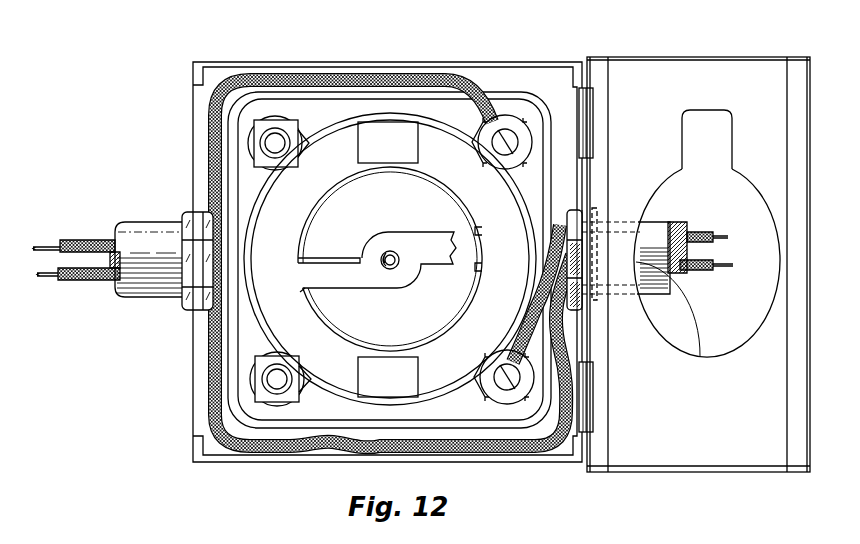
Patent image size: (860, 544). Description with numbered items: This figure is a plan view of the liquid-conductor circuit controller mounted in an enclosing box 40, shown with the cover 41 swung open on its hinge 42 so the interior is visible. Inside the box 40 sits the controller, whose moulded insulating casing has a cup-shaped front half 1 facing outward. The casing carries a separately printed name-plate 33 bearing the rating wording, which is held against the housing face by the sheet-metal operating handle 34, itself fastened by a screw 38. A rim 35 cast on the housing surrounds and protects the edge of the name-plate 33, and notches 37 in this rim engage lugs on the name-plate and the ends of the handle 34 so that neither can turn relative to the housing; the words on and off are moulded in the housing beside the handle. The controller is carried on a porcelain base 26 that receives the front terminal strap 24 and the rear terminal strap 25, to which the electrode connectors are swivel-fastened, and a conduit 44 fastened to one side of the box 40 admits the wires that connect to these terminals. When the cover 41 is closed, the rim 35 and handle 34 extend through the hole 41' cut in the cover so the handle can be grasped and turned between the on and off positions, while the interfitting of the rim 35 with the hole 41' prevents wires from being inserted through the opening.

The front half of casing 1 is at (332, 137).
The front terminal strap 24 is at (512, 395).
The rear terminal strap 25 is at (520, 144).
The base 26 is at (522, 108).
The name-plate 33 is at (452, 220).
The operating handle 34 is at (300, 260).
The rim 35 is at (482, 288).
The notches 37 is at (483, 236).
The screw 38 is at (394, 259).
The enclosing box 40 is at (562, 62).
The cover 41 is at (698, 244).
The hole 41' is at (707, 282).
The hinge 42 is at (593, 108).
The conduit 44 is at (663, 233).